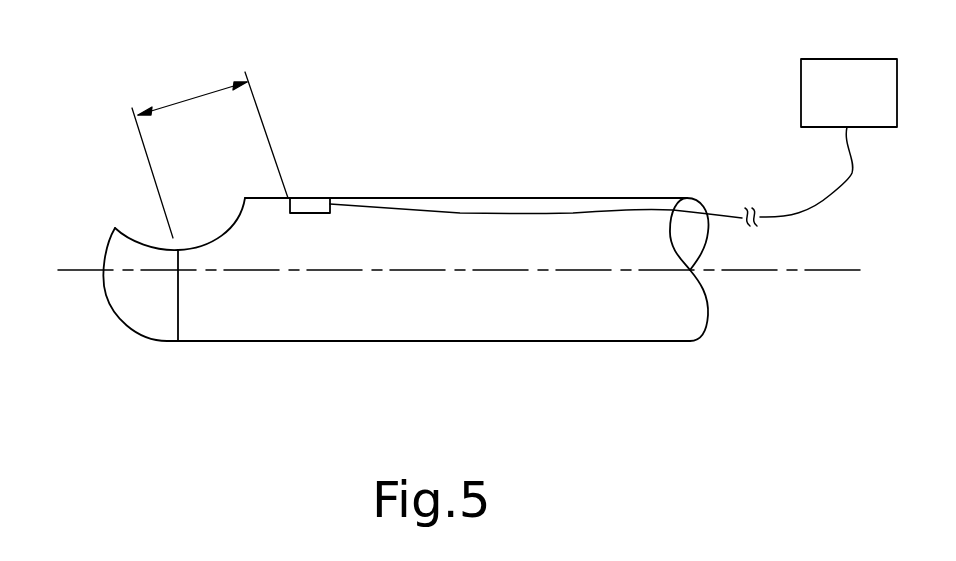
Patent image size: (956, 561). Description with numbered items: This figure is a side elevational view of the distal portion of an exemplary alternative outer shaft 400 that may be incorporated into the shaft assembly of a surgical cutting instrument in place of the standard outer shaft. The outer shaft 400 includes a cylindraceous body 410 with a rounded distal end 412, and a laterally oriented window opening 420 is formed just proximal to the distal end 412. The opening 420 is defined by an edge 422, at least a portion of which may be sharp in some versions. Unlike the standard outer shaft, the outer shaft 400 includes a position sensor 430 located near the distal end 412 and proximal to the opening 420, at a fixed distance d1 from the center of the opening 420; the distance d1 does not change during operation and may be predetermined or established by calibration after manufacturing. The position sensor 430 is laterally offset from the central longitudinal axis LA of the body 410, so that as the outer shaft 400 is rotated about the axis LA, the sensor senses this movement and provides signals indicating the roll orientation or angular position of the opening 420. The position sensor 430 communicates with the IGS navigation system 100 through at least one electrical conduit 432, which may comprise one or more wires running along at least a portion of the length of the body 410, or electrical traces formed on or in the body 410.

The IGS navigation system 100 is at (872, 106).
The outer shaft 400 is at (475, 229).
The cylindraceous body 410 is at (497, 322).
The rounded distal end 412 is at (103, 262).
The window opening 420 is at (191, 168).
The edge 422 is at (144, 240).
The position sensor 430 is at (315, 203).
The electrical conduit 432 is at (573, 213).
The central longitudinal axis LA is at (770, 272).
The distance d1 is at (197, 93).